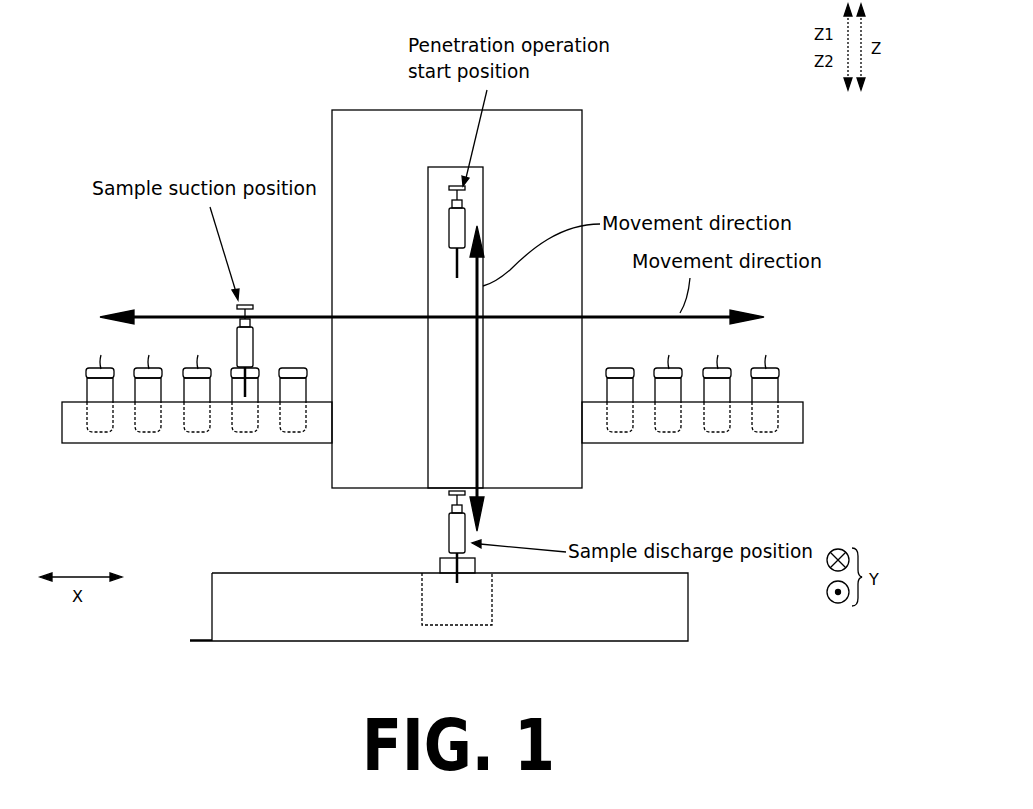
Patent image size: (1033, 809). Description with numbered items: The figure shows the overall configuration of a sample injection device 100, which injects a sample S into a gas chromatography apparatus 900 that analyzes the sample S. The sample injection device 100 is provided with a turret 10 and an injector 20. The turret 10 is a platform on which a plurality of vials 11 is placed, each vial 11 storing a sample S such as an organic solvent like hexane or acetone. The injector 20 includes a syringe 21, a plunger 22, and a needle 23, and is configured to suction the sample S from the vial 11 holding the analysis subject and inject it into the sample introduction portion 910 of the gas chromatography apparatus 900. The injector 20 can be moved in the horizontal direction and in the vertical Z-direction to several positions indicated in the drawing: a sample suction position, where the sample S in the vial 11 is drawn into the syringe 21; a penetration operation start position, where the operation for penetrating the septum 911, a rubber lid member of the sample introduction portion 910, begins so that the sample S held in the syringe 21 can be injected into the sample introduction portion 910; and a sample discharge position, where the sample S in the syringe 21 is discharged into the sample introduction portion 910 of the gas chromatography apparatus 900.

The sample injection device 100 is at (343, 78).
The turret 10 is at (76, 406).
The vial 11 is at (432, 416).
The injector 20 is at (351, 380).
The syringe 21 is at (449, 230).
The plunger 22 is at (449, 198).
The needle 23 is at (455, 264).
The gas chromatography apparatus 900 is at (272, 546).
The sample introduction portion 910 is at (420, 603).
The septum 911 is at (440, 566).